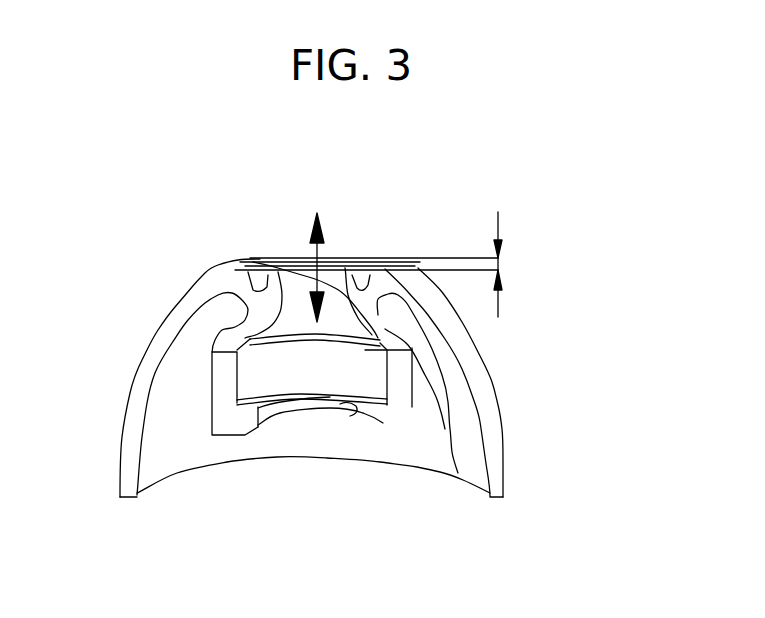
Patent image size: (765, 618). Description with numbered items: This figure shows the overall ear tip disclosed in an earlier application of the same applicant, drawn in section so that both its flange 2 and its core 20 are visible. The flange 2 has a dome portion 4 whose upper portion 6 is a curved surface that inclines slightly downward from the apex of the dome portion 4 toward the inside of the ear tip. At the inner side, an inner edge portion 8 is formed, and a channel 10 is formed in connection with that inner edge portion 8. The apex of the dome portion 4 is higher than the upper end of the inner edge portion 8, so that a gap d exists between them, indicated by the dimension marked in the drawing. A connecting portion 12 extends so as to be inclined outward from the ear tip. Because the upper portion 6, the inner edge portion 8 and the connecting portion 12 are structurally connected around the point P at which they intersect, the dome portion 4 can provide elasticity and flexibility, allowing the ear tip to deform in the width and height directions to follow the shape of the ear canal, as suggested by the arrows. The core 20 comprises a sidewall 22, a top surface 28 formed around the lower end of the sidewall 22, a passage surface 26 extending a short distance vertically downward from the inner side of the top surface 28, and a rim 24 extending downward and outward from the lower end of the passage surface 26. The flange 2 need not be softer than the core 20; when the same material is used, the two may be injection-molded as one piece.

The flange 2 is at (468, 382).
The dome portion 4 is at (495, 433).
The upper portion 6 is at (457, 328).
The inner edge portion 8 is at (348, 273).
The channel 10 is at (370, 272).
The connecting portion 12 is at (458, 473).
The core 20 is at (412, 407).
The sidewall 22 is at (400, 382).
The rim 24 is at (375, 400).
The passage surface 26 is at (360, 403).
The top surface 28 is at (343, 412).
The point P is at (253, 262).
The gap d is at (384, 264).